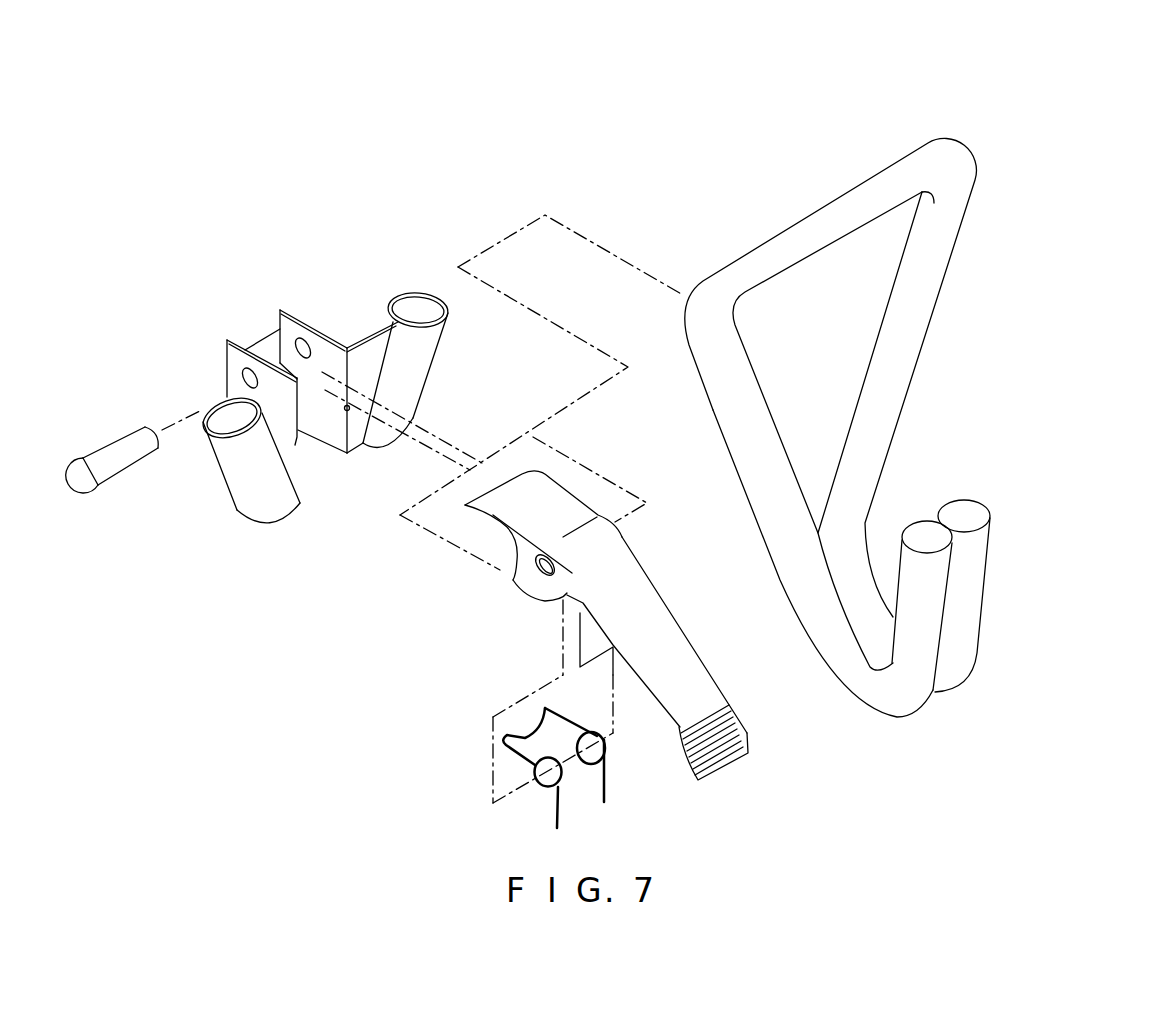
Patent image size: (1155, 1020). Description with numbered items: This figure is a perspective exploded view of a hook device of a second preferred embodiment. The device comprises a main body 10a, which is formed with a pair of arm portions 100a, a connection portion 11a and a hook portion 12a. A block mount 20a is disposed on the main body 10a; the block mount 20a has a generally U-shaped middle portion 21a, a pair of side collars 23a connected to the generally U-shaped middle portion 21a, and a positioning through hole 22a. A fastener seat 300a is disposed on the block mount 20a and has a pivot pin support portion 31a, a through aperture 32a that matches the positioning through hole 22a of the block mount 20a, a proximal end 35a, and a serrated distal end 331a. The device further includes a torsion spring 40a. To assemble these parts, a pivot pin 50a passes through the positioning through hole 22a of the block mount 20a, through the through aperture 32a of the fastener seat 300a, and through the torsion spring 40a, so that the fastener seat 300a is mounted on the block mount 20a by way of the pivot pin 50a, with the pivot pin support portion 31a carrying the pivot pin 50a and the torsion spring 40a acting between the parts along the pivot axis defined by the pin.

The main body 10a is at (911, 427).
The arm portions 100a is at (930, 332).
The connection portion 11a is at (823, 537).
The hook portion 12a is at (983, 578).
The block mount 20a is at (365, 335).
The generally U-shaped middle portion 21a is at (265, 352).
The positioning through hole 22a is at (304, 350).
The side collars 23a is at (415, 375).
The pivot pin 50a is at (120, 453).
The fastener seat 300a is at (653, 584).
The proximal end 35a is at (535, 500).
The pivot pin support portion 31a is at (528, 552).
The through aperture 32a is at (546, 577).
The serrated distal end 331a is at (735, 742).
The torsion spring 40a is at (480, 768).